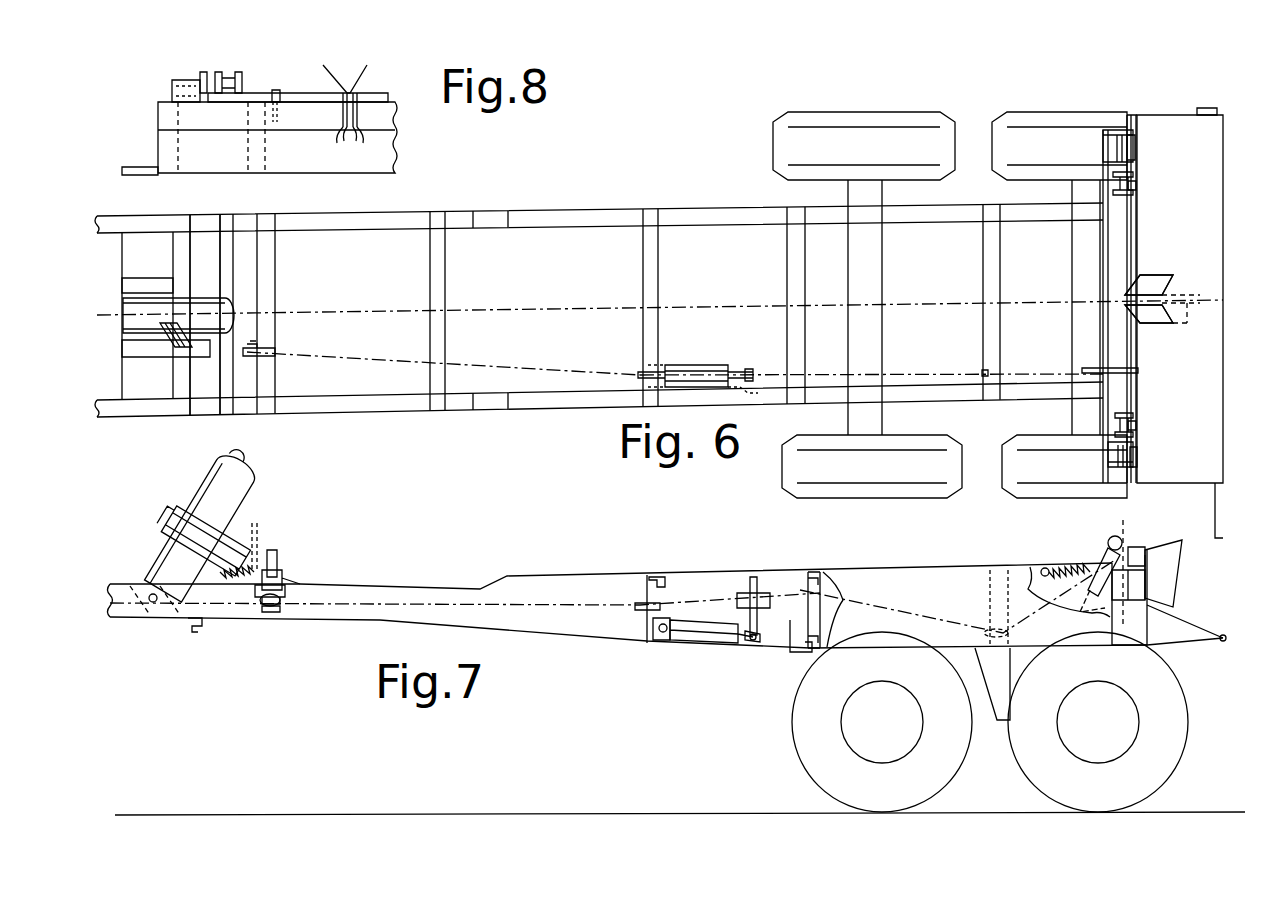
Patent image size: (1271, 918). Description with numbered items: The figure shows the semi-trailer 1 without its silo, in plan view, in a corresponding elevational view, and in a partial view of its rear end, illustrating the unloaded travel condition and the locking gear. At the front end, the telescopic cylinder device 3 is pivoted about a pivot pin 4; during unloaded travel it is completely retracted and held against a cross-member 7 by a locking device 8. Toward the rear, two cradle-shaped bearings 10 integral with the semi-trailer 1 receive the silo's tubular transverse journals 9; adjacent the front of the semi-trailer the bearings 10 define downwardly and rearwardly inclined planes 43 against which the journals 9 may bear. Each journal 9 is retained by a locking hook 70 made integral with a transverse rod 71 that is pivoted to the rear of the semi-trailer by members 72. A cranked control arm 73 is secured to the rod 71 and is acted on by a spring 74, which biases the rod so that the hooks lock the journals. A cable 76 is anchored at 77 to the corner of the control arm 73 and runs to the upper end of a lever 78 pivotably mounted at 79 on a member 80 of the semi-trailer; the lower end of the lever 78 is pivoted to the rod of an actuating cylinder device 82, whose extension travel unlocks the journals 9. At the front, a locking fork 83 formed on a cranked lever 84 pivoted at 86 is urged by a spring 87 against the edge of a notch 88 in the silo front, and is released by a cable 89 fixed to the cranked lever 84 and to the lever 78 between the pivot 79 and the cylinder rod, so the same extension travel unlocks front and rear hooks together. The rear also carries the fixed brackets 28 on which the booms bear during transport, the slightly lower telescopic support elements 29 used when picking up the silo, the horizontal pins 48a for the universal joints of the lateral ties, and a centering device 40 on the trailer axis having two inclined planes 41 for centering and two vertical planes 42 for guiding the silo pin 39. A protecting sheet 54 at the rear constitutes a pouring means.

In FIG. 6, the semi-trailer 1 is at (602, 208).
In FIG. 7, the telescopic cylinder device 3 is at (249, 470).
In FIG. 6, the pivot pin 4 is at (156, 290).
In FIG. 7, the pivot pin 4 is at (160, 607).
In FIG. 6, the cross-member 7 is at (198, 404).
In FIG. 7, the cross-member 7 is at (246, 526).
In FIG. 6, the locking device 8 is at (178, 356).
In FIG. 7, the locking device 8 is at (165, 518).
In FIG. 7, the tubular transverse journal 9 is at (1139, 567).
In FIG. 8, the bearing 10 is at (178, 83).
In FIG. 6, the bearing 10 is at (1136, 148).
In FIG. 7, the bearing 10 is at (1138, 547).
In FIG. 6, the fixed bracket 28 is at (1130, 116).
In FIG. 7, the fixed bracket 28 is at (1152, 610).
In FIG. 8, the telescopic support element 29 is at (136, 167).
In FIG. 6, the telescopic support element 29 is at (1207, 108).
In FIG. 7, the telescopic support element 29 is at (1225, 638).
In FIG. 6, the pin 39 is at (1189, 319).
In FIG. 6, the centering device 40 is at (1154, 270).
In FIG. 8, the inclined plane 41 is at (360, 78).
In FIG. 6, the inclined plane 41 is at (1162, 280).
In FIG. 7, the inclined plane 41 is at (1166, 560).
In FIG. 8, the vertical plane 42 is at (350, 128).
In FIG. 6, the inclined plane 43 is at (1103, 143).
In FIG. 7, the inclined plane 43 is at (1116, 598).
In FIG. 8, the horizontal pin 48a is at (242, 93).
In FIG. 6, the horizontal pin 48a is at (1134, 190).
In FIG. 6, the protecting sheet 54 is at (1173, 116).
In FIG. 7, the locking hook 70 is at (1118, 527).
In FIG. 6, the transverse rod 71 is at (1138, 376).
In FIG. 7, the transverse rod 71 is at (1152, 588).
In FIG. 6, the pivot member 72 is at (1135, 175).
In FIG. 6, the cranked control arm 73 is at (1088, 364).
In FIG. 7, the cranked control arm 73 is at (1078, 608).
In FIG. 7, the spring 74 is at (1050, 570).
In FIG. 6, the cable 76 is at (914, 375).
In FIG. 7, the cable 76 is at (925, 616).
In FIG. 7, the anchoring point 77 is at (1108, 554).
In FIG. 7, the lever 78 is at (780, 638).
In FIG. 7, the pivot 79 is at (760, 600).
In FIG. 7, the member 80 is at (740, 594).
In FIG. 6, the actuating cylinder device 82 is at (698, 366).
In FIG. 7, the actuating cylinder device 82 is at (705, 638).
In FIG. 7, the locking fork 83 is at (296, 570).
In FIG. 6, the cranked lever 84 is at (258, 357).
In FIG. 7, the cranked lever 84 is at (288, 588).
In FIG. 7, the pivot 86 is at (274, 603).
In FIG. 7, the spring 87 is at (235, 593).
In FIG. 7, the notch 88 is at (276, 552).
In FIG. 6, the cable 89 is at (520, 350).
In FIG. 7, the cable 89 is at (580, 605).